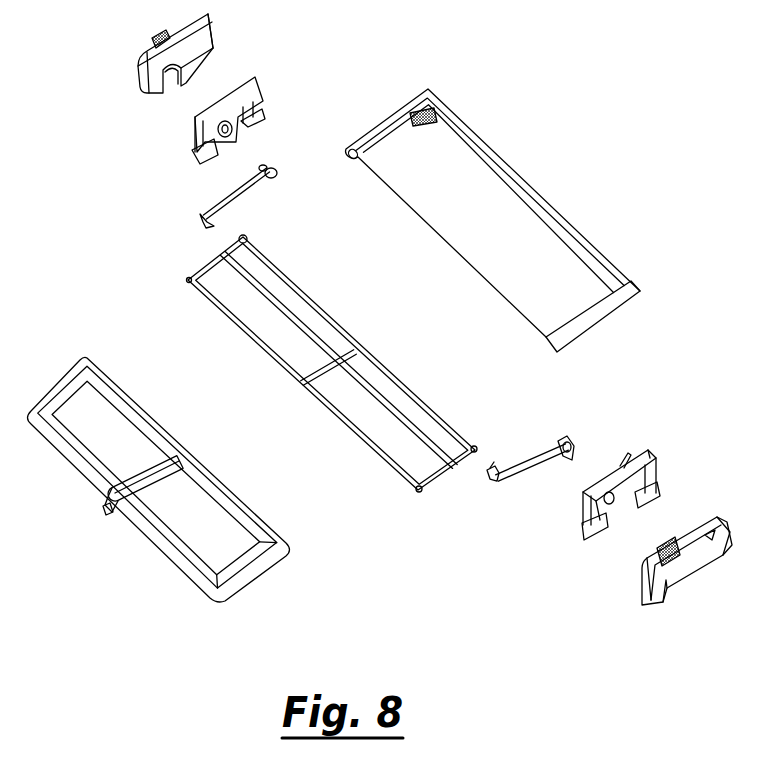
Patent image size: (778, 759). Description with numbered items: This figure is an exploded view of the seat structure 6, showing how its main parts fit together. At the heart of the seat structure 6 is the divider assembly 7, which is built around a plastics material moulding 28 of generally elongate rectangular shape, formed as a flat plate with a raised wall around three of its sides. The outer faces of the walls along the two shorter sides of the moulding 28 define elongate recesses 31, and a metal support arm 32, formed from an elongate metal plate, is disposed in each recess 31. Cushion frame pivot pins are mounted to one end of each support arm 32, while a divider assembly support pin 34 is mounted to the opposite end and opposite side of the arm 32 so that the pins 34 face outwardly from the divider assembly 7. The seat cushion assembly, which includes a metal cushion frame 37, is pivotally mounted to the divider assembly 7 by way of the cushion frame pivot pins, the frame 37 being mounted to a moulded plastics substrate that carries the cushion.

The seat structure 6 is at (130, 528).
The divider assembly 7 is at (505, 155).
The plastics material moulding 28 is at (137, 88).
The elongate recess 31 is at (495, 483).
The metal support arm 32 is at (530, 467).
The divider assembly support pin 34 is at (566, 438).
The metal cushion frame 37 is at (187, 283).